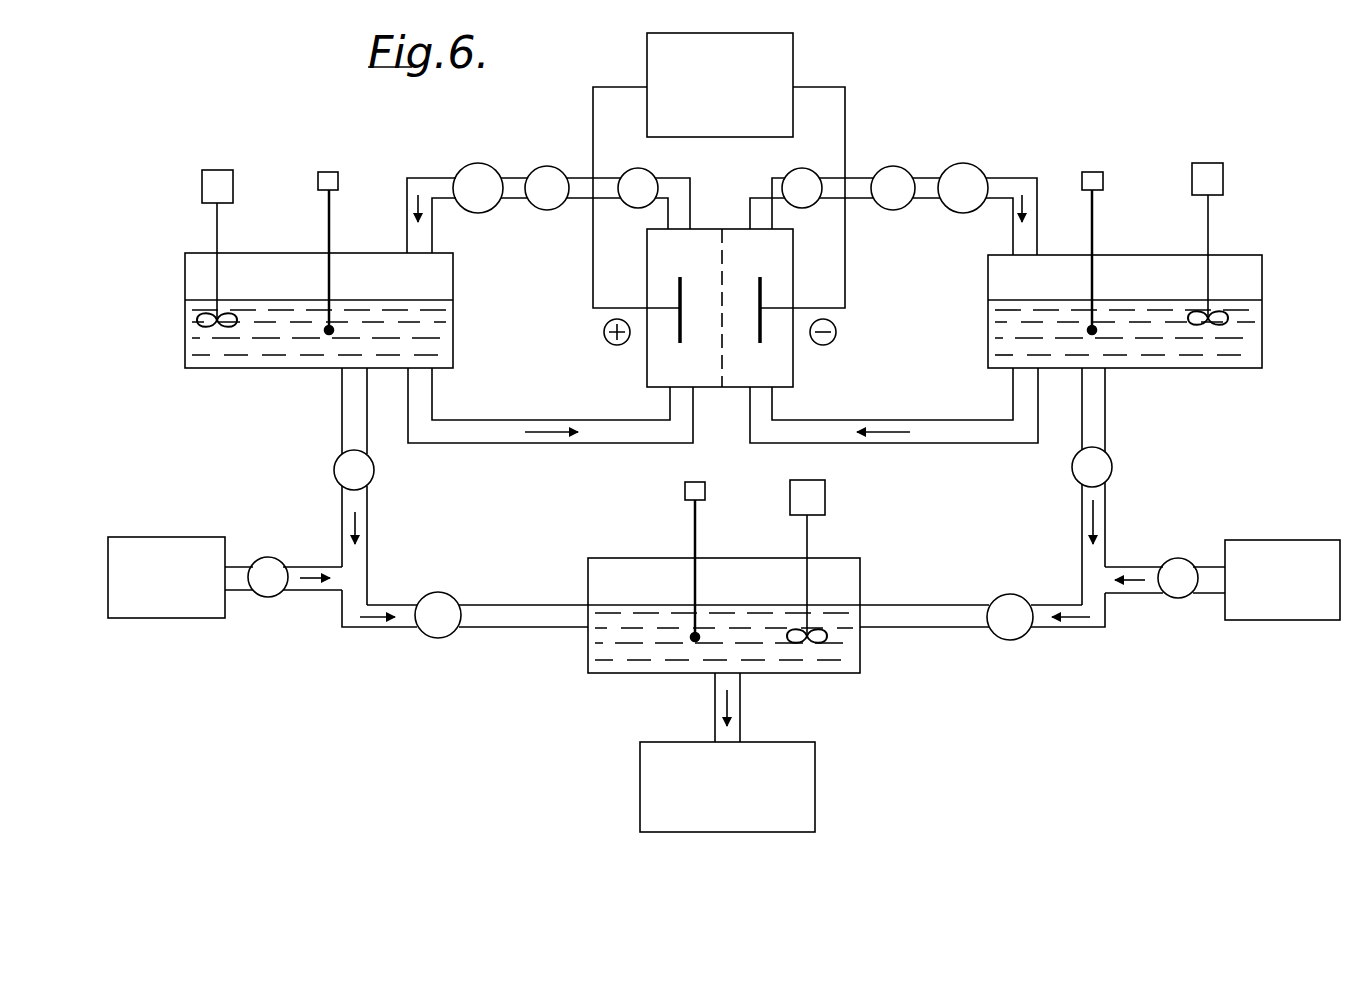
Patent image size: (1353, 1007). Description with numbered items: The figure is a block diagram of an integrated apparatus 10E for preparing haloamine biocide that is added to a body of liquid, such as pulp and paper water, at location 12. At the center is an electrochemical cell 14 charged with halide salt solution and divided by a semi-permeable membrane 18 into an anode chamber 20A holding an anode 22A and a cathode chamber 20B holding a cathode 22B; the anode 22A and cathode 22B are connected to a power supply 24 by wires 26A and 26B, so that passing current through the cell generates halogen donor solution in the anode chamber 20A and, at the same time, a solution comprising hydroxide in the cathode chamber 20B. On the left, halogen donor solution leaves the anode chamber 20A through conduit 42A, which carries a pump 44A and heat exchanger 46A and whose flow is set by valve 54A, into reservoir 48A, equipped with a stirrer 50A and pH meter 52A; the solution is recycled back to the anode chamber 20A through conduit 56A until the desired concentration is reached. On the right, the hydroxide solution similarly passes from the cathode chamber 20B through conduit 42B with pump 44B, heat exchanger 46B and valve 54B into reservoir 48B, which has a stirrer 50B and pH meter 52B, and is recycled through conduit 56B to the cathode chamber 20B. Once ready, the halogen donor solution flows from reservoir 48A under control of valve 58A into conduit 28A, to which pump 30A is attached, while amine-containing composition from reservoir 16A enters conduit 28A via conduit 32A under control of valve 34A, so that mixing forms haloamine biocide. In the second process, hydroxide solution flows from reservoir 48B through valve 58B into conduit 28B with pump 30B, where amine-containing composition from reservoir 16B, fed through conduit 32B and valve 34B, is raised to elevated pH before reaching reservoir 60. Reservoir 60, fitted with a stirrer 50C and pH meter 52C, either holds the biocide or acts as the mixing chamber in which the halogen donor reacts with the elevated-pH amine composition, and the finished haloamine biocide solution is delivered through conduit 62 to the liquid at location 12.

The apparatus 10E is at (958, 102).
The location 12 is at (800, 793).
The electrochemical cell 14 is at (705, 227).
The reservoir 16A is at (170, 550).
The reservoir 16B is at (1285, 555).
The semi-permeable membrane 18 is at (733, 378).
The anode chamber 20A is at (657, 362).
The cathode chamber 20B is at (778, 373).
The anode 22A is at (680, 287).
The cathode 22B is at (761, 288).
The power supply 24 is at (793, 42).
The wire 26A is at (602, 78).
The wire 26B is at (830, 86).
The conduit 28A is at (345, 413).
The conduit 28B is at (1098, 410).
The pump 30A is at (446, 634).
The pump 30B is at (1010, 594).
The conduit 32A is at (303, 589).
The conduit 32B is at (1145, 590).
The valve 34A is at (276, 565).
The valve 34B is at (1193, 540).
The conduit 42A is at (428, 180).
The conduit 42B is at (1012, 179).
The pump 44A is at (560, 167).
The pump 44B is at (895, 167).
The heat exchanger 46A is at (474, 165).
The heat exchanger 46B is at (966, 164).
The reservoir 48A is at (275, 270).
The reservoir 48B is at (1150, 262).
The stirrer 50A is at (250, 150).
The stirrer 50B is at (1212, 172).
The stirrer 50C is at (816, 497).
The pH meter 52A is at (330, 172).
The pH meter 52B is at (1120, 150).
The pH meter 52C is at (685, 492).
The valve 54A is at (648, 149).
The valve 54B is at (808, 168).
The conduit 56A is at (505, 430).
The conduit 56B is at (950, 430).
The valve 58A is at (334, 470).
The valve 58B is at (1112, 464).
The reservoir 60 is at (624, 570).
The conduit 62 is at (742, 706).